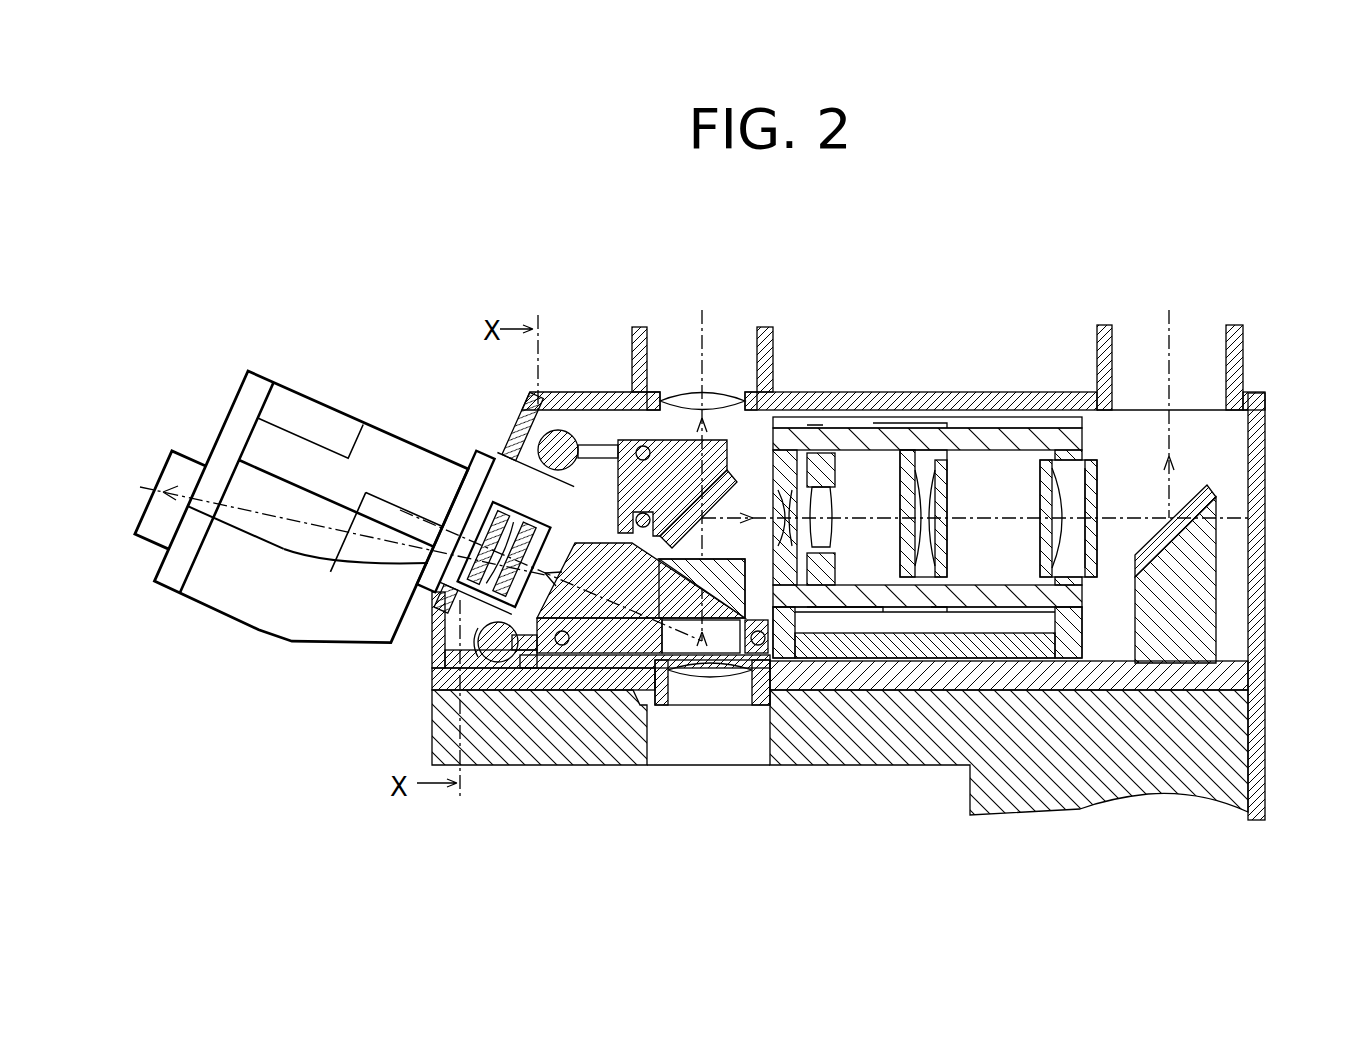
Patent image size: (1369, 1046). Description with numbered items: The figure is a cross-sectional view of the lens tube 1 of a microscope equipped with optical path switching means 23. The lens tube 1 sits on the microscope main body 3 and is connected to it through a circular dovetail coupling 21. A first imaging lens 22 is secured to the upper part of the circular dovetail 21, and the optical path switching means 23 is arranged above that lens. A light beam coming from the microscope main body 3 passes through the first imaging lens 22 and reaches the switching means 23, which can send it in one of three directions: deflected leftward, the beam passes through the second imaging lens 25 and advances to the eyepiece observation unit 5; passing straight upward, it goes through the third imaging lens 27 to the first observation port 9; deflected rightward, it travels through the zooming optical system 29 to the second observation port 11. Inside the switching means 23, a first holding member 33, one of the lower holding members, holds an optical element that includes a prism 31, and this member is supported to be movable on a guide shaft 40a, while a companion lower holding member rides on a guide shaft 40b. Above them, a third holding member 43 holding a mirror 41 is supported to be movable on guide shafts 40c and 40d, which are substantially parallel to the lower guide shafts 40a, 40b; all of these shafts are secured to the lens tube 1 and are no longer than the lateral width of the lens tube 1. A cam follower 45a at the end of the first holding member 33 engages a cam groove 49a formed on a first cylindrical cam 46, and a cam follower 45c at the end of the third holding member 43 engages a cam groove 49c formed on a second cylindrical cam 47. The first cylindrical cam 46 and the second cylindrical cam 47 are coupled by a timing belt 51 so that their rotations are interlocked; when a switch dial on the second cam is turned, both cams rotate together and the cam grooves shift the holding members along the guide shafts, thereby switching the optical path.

The lens tube 1 is at (1265, 452).
The microscope main body 3 is at (1243, 762).
The eyepiece observation unit 5 is at (213, 590).
The first observation port 9 is at (740, 470).
The second observation port 11 is at (1237, 349).
The circular dovetail coupling 21 is at (640, 668).
The first imaging lens 22 is at (713, 677).
The optical path switching means 23 is at (615, 415).
The second imaging lens 25 is at (450, 517).
The third imaging lens 27 is at (715, 445).
The zooming optical system 29 is at (970, 440).
The prism 31 is at (665, 605).
The first holding member 33 is at (587, 627).
The guide shaft 40a is at (560, 647).
The guide shaft 40b is at (762, 655).
The guide shaft 40c is at (643, 446).
The guide shaft 40d is at (768, 640).
The mirror 41 is at (776, 420).
The third holding member 43 is at (690, 392).
The cam follower 45a is at (527, 652).
The cam follower 45c is at (578, 425).
The first cylindrical cam 46 is at (478, 628).
The second cylindrical cam 47 is at (585, 445).
The cam groove 49a is at (493, 661).
The cam groove 49c is at (548, 433).
The timing belt 51 is at (530, 490).